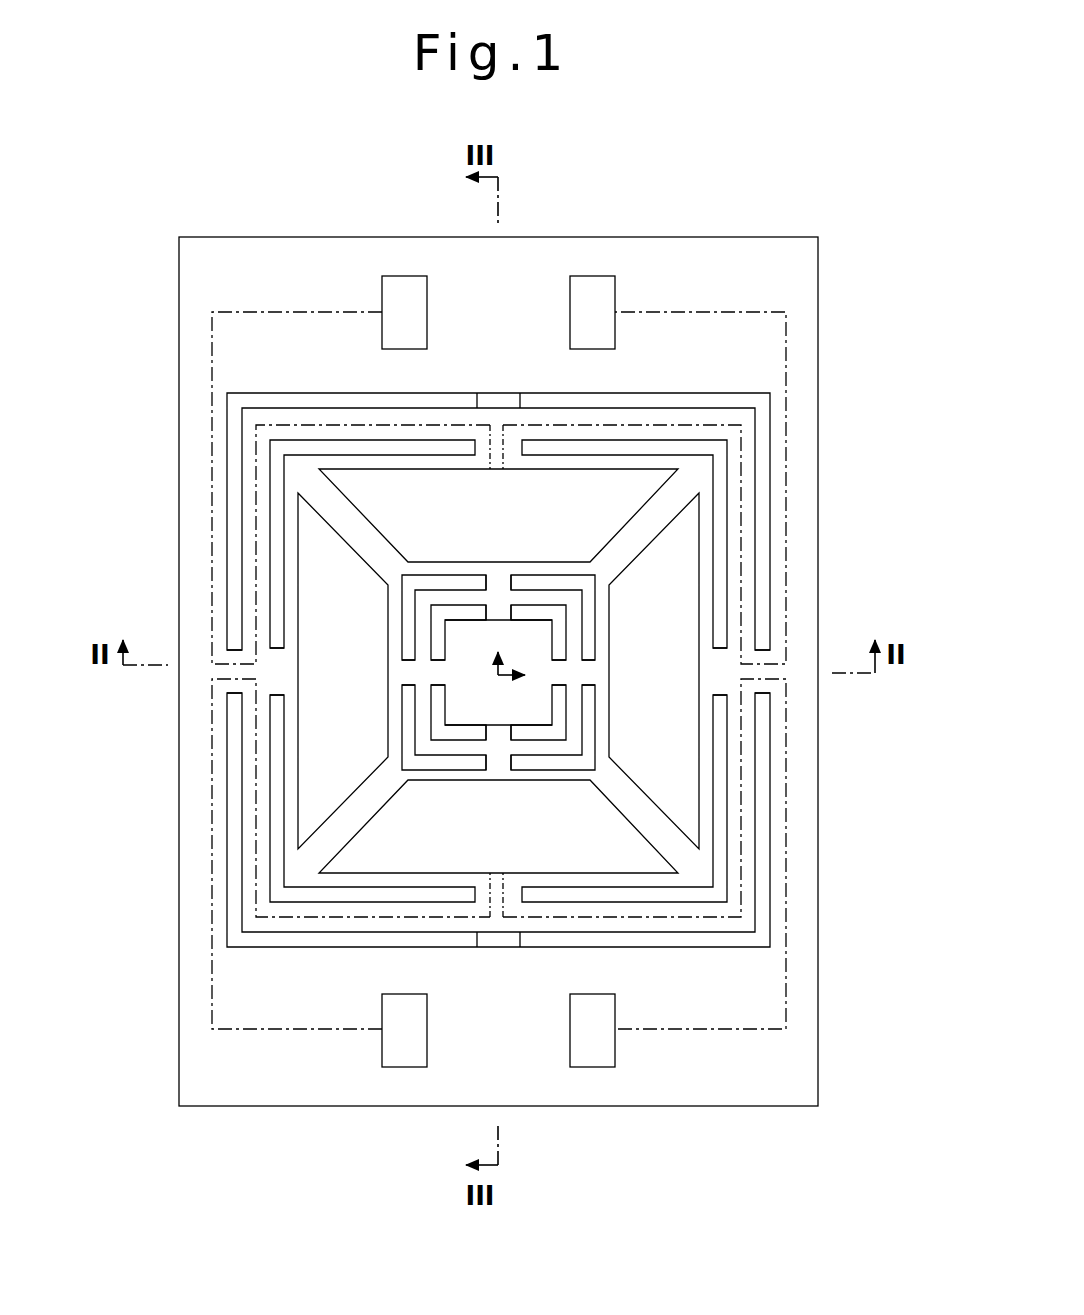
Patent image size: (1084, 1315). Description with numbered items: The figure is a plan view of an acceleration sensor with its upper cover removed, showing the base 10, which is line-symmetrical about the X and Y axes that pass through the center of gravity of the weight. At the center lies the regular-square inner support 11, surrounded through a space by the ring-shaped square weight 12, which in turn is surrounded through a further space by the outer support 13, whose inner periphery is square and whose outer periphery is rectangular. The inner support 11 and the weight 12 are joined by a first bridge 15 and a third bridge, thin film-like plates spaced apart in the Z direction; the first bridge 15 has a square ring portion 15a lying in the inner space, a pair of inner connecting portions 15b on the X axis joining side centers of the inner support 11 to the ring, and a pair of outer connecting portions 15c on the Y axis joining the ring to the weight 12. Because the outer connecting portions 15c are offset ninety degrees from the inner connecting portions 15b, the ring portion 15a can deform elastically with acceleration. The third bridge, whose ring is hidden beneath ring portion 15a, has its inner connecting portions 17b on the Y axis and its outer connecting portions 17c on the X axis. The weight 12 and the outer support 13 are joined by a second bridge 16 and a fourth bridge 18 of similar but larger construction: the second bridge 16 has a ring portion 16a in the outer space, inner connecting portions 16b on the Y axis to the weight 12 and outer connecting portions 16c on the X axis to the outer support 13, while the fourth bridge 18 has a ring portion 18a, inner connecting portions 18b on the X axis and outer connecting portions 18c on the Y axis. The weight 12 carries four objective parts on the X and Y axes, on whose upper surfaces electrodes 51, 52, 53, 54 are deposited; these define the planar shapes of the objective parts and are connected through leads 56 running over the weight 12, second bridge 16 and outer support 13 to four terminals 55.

The base 10 is at (448, 607).
The inner support 11 is at (438, 705).
The weight 12 is at (282, 862).
The outer support 13 is at (170, 914).
The first bridge 15 is at (567, 662).
The ring portion 15a is at (586, 641).
The inner connecting portions 15b is at (440, 670).
The outer connecting portions 15c is at (499, 583).
The second bridge 16 is at (556, 586).
The ring portion 16a is at (757, 473).
The inner connecting portions 16b is at (486, 452).
The outer connecting portions 16c is at (268, 676).
The inner connecting portions 17b is at (492, 607).
The outer connecting portions 17c is at (590, 670).
The fourth bridge 18 is at (762, 610).
The ring portion 18a is at (757, 513).
The inner connecting portions 18b is at (277, 663).
The outer connecting portions 18c is at (503, 402).
The electrode 51 is at (318, 545).
The electrode 52 is at (680, 557).
The electrode 53 is at (372, 848).
The electrode 54 is at (622, 490).
The terminals 55 is at (405, 276).
The leads 56 is at (212, 350).